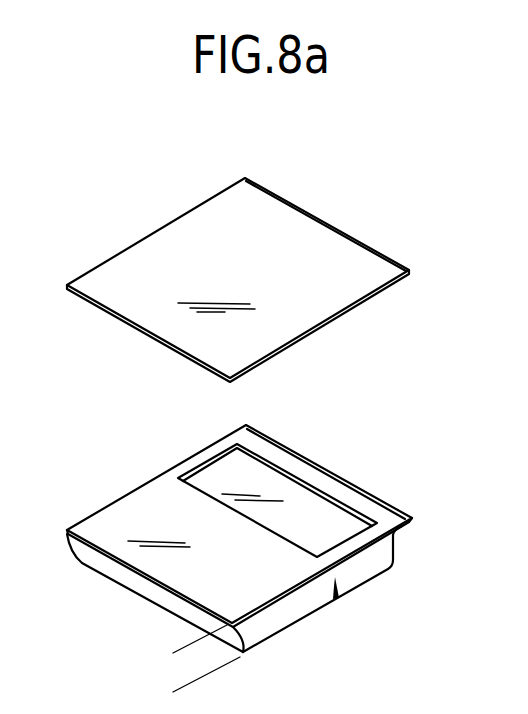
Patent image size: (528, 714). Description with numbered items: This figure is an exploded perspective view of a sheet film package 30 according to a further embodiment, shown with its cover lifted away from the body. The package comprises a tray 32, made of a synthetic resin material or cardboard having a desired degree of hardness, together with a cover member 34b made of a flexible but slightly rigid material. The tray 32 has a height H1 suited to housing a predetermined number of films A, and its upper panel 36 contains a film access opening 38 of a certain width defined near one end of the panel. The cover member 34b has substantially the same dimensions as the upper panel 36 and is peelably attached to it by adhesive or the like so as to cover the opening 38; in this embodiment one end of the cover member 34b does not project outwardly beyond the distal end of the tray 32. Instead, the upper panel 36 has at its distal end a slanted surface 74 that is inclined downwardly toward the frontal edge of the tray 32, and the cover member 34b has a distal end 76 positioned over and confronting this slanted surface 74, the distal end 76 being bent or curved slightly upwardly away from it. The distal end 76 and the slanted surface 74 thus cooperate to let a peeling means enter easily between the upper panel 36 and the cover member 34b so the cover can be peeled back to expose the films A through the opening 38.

The sheet film package 30 is at (266, 525).
The tray 32 is at (333, 468).
The cover member 34b is at (267, 263).
The upper panel 36 is at (265, 580).
The film access opening 38 is at (327, 458).
The slanted surface 74 is at (368, 491).
The distal end of cover member 76 is at (375, 248).
The films A is at (343, 523).
The height of tray H1 is at (198, 658).